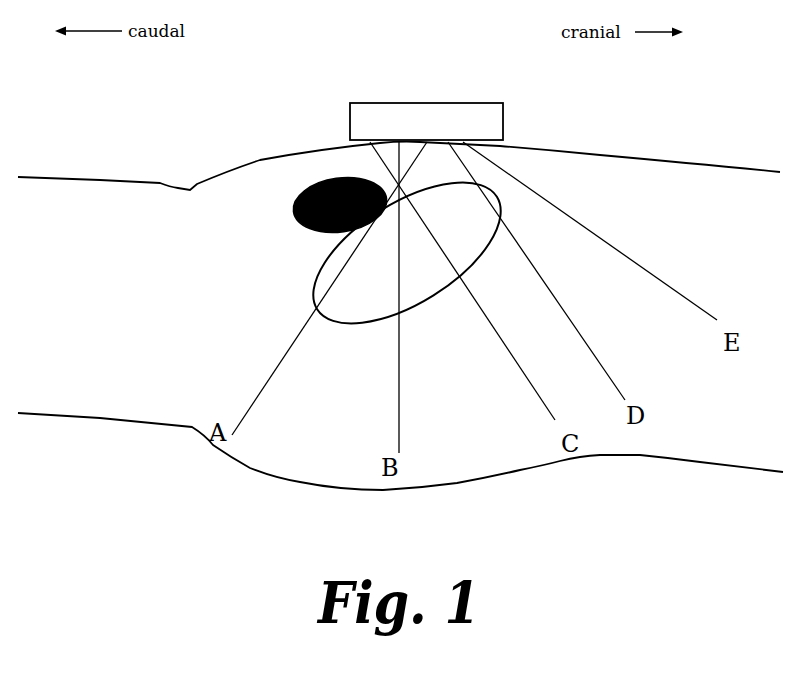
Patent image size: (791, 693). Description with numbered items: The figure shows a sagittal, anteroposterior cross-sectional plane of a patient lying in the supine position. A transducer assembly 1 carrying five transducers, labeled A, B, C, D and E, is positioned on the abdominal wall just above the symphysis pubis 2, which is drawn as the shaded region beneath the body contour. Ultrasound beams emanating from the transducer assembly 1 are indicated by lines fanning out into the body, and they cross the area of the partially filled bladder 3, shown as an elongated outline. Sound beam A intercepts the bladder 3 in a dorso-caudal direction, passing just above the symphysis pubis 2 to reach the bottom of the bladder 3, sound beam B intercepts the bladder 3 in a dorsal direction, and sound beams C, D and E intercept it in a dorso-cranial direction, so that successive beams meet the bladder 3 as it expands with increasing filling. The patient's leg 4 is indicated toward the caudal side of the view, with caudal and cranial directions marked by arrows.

The transducer assembly 1 is at (526, 111).
The symphysis pubis 2 is at (316, 190).
The bladder 3 is at (437, 302).
The patient's leg 4 is at (400, 316).